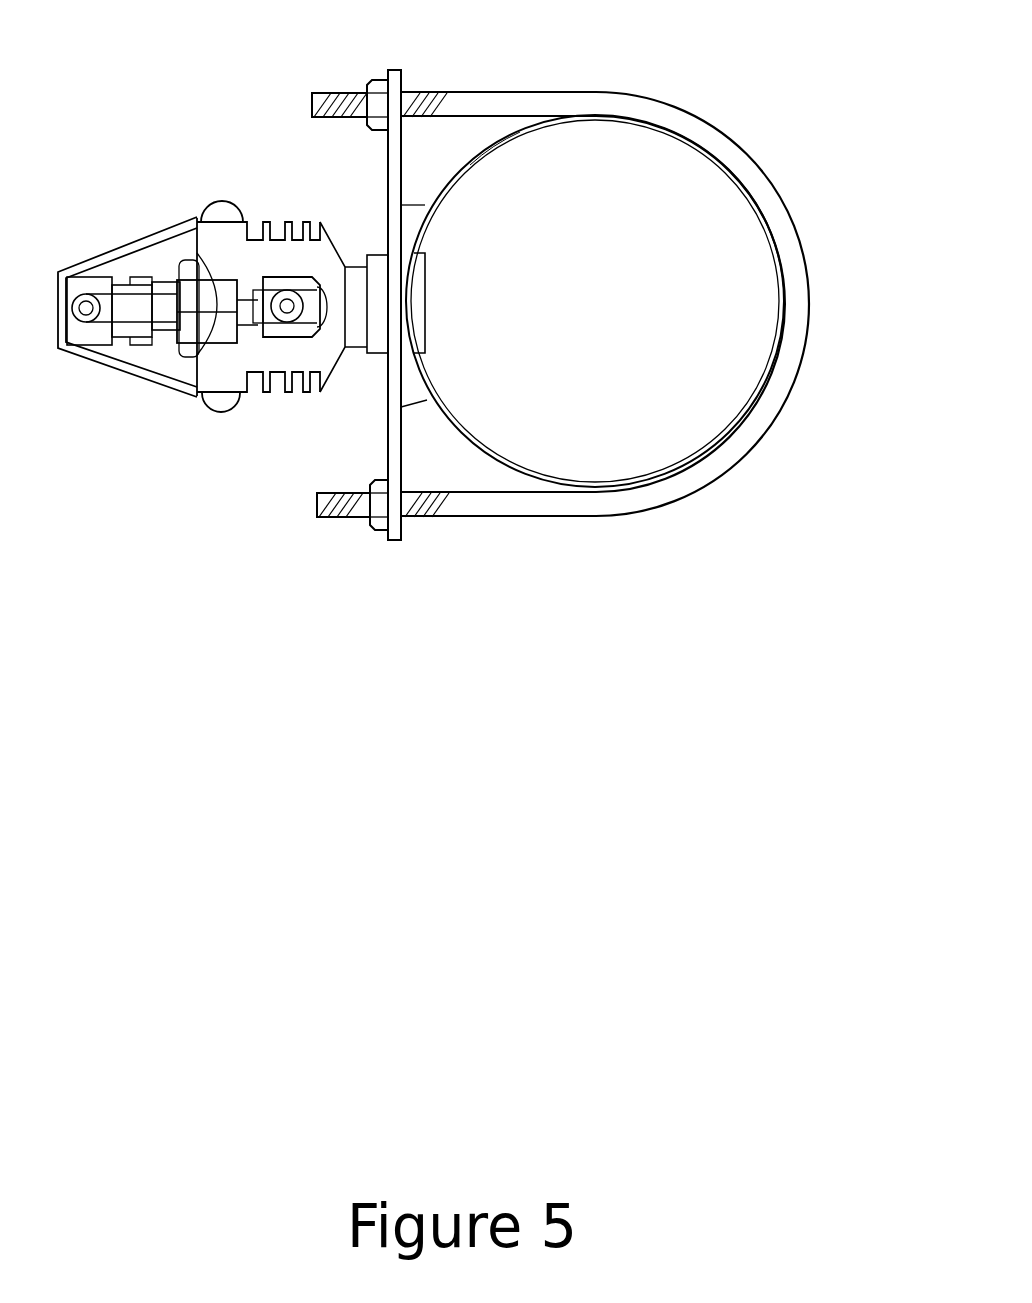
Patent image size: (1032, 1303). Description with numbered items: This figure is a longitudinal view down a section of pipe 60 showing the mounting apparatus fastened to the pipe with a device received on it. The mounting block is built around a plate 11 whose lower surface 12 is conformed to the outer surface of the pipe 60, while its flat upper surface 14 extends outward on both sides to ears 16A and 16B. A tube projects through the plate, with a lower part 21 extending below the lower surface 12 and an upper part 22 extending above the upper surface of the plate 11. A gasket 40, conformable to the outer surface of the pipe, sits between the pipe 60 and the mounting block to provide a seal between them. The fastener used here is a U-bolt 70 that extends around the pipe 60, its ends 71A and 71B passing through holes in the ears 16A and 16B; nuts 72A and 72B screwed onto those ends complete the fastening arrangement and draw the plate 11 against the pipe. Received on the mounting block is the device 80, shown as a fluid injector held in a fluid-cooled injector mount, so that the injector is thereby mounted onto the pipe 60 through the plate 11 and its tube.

The plate 11 is at (405, 152).
The lower surface 12 is at (491, 194).
The flat upper surface 14 is at (386, 173).
The ear 16A is at (404, 542).
The ear 16B is at (394, 68).
The lower part of tube 21 is at (420, 318).
The upper part of tube 22 is at (365, 340).
The gasket 40 is at (432, 400).
The pipe 60 is at (600, 122).
The U-bolt 70 is at (797, 292).
The end of U-bolt 71A is at (315, 505).
The end of U-bolt 71B is at (312, 108).
The nut 72A is at (378, 531).
The nut 72B is at (368, 80).
The device 80 is at (231, 352).